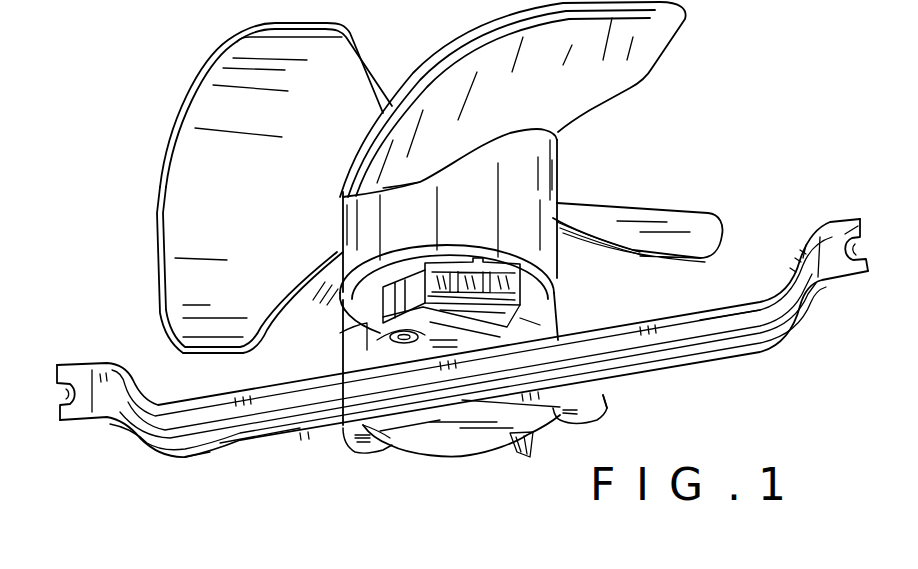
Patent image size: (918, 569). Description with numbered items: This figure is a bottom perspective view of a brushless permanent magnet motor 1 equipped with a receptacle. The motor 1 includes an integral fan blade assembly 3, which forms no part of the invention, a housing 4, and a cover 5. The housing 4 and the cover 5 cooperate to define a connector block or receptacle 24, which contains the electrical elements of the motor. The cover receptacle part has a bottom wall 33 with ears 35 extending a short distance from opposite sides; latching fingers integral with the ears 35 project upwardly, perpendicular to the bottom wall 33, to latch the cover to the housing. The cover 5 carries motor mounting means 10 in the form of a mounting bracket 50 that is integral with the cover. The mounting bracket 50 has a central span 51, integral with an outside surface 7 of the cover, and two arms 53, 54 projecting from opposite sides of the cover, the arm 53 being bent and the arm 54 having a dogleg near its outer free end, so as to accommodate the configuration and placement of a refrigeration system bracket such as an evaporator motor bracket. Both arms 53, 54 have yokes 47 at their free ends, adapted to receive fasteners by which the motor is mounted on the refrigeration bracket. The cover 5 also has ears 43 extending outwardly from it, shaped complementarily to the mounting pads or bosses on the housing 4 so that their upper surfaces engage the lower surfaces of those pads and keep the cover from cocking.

The brushless permanent magnet motor 1 is at (615, 135).
The fan blade assembly 3 is at (645, 193).
The housing 4 is at (550, 301).
The cover 5 is at (465, 450).
The outside surface 7 is at (443, 438).
The motor mounting means 10 is at (712, 372).
The connector block or receptacle 24 is at (505, 258).
The bottom wall 33 is at (377, 343).
The ears 35 is at (345, 327).
The ears 43 is at (340, 367).
The yokes 47 is at (95, 423).
The mounting bracket 50 is at (294, 440).
The central span 51 is at (408, 416).
The arm 53 is at (782, 345).
The arm 54 is at (213, 452).